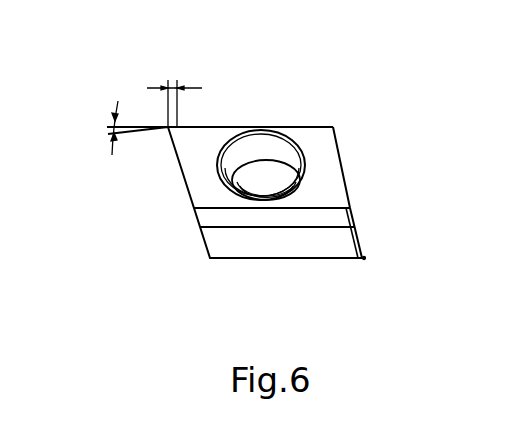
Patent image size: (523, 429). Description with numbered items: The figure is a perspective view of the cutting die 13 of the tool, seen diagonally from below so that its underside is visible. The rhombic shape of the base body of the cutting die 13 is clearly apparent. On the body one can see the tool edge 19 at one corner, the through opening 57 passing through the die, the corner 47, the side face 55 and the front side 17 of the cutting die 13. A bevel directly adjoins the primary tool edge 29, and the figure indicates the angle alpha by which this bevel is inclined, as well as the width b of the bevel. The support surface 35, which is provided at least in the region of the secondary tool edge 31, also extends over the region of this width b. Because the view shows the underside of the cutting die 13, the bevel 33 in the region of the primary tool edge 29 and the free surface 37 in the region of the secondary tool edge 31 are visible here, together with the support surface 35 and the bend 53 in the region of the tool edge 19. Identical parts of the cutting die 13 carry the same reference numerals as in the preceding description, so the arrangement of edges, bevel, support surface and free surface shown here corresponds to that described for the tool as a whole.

The cutting die 13 is at (351, 186).
The tool edge 19 is at (168, 127).
The front side 17 is at (325, 201).
The through opening 57 is at (272, 187).
The corner 47 is at (334, 126).
The side face 55 is at (183, 173).
The primary tool edge 29 is at (357, 214).
The secondary tool edge 31 is at (356, 248).
The bevel 33 is at (213, 217).
The free surface 37 is at (222, 248).
The bend 53 is at (352, 247).
The support surface 35 is at (363, 262).
The width b is at (178, 80).
The angle alpha is at (118, 131).